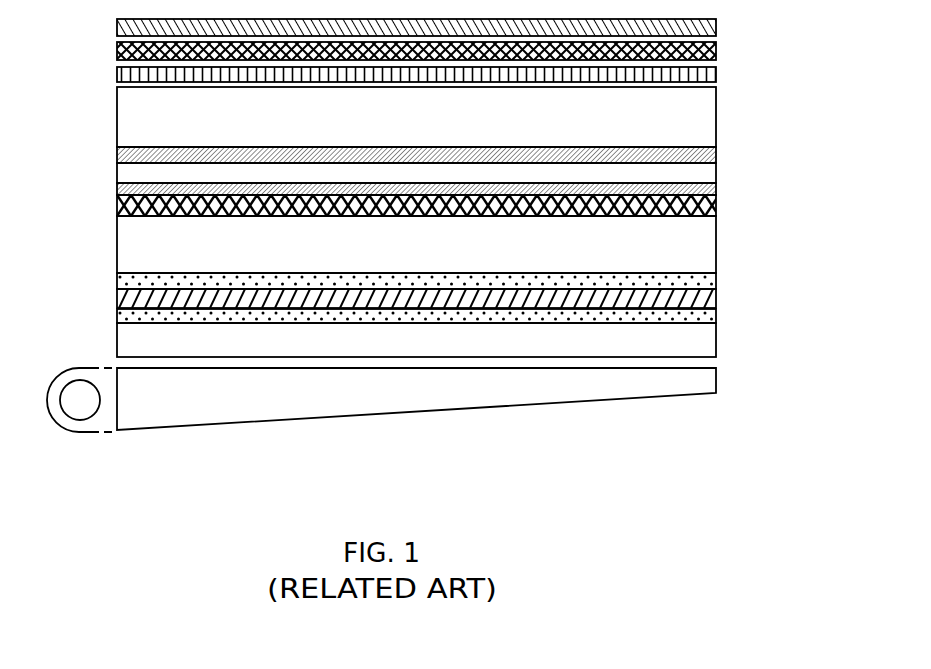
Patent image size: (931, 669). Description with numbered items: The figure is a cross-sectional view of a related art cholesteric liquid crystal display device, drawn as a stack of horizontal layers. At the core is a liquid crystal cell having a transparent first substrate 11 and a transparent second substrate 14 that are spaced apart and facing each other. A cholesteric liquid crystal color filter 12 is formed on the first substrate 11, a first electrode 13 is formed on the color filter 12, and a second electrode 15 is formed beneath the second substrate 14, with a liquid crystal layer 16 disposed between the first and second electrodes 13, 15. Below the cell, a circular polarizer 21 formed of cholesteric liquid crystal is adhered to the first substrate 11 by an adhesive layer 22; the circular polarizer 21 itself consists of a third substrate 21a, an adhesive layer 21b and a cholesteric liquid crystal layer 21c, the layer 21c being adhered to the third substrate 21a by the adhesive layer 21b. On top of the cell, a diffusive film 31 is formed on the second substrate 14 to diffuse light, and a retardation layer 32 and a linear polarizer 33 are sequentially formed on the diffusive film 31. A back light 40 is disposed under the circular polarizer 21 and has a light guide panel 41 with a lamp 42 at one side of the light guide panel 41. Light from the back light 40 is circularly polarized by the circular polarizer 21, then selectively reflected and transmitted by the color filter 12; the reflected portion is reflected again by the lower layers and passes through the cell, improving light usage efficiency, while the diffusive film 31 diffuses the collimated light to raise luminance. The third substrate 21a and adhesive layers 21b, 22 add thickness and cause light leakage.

The first substrate 11 is at (697, 245).
The cholesteric liquid crystal color filter 12 is at (714, 211).
The first electrode 13 is at (714, 193).
The second substrate 14 is at (697, 112).
The second electrode 15 is at (712, 160).
The liquid crystal layer 16 is at (697, 175).
The circular polarizer 21 is at (482, 323).
The third substrate 21a is at (697, 345).
The adhesive layer 21b is at (712, 319).
The cholesteric liquid crystal layer 21c is at (712, 303).
The adhesive layer 22 is at (712, 284).
The diffusive film 31 is at (716, 75).
The retardation layer 32 is at (714, 51).
The linear polarizer 33 is at (716, 27).
The back light 40 is at (413, 420).
The light guide panel 41 is at (409, 400).
The lamp 42 is at (80, 406).